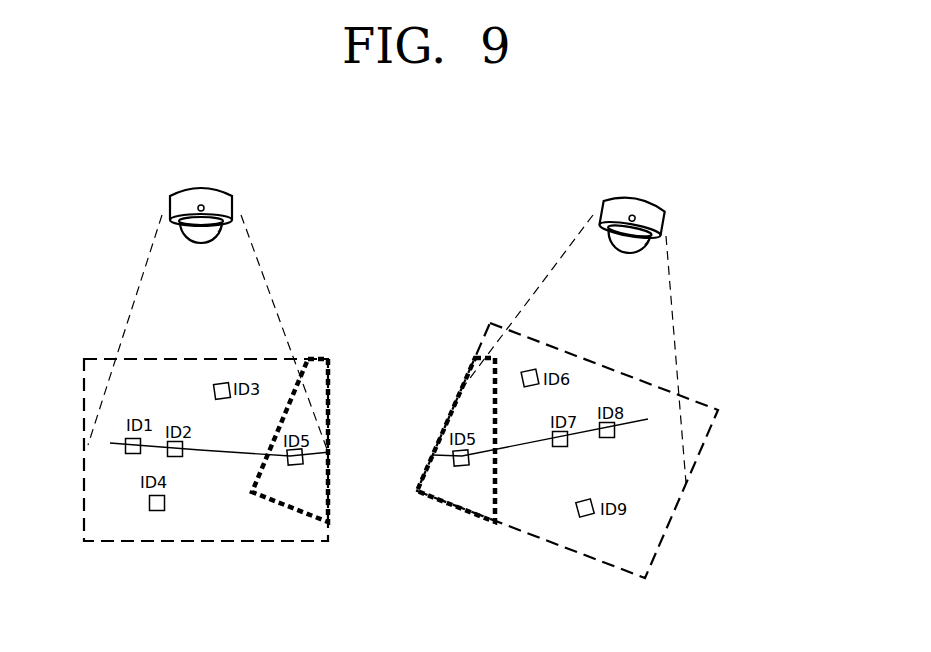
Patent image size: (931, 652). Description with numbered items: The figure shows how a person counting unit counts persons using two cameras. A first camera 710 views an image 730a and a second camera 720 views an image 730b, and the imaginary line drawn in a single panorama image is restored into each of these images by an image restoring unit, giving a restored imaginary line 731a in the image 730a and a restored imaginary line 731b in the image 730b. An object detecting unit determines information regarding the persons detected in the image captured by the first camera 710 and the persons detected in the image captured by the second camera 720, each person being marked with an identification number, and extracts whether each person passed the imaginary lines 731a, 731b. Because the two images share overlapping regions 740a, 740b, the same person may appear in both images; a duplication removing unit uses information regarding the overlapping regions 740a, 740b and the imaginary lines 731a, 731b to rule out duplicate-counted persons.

The first camera 710 is at (201, 185).
The second camera 720 is at (637, 197).
The image viewed by the first camera 730a is at (235, 541).
The restored imaginary line 731a is at (212, 452).
The overlapping region 740a is at (293, 510).
The image viewed by the second camera 730b is at (573, 550).
The restored imaginary line 731b is at (633, 424).
The overlapping region 740b is at (458, 508).